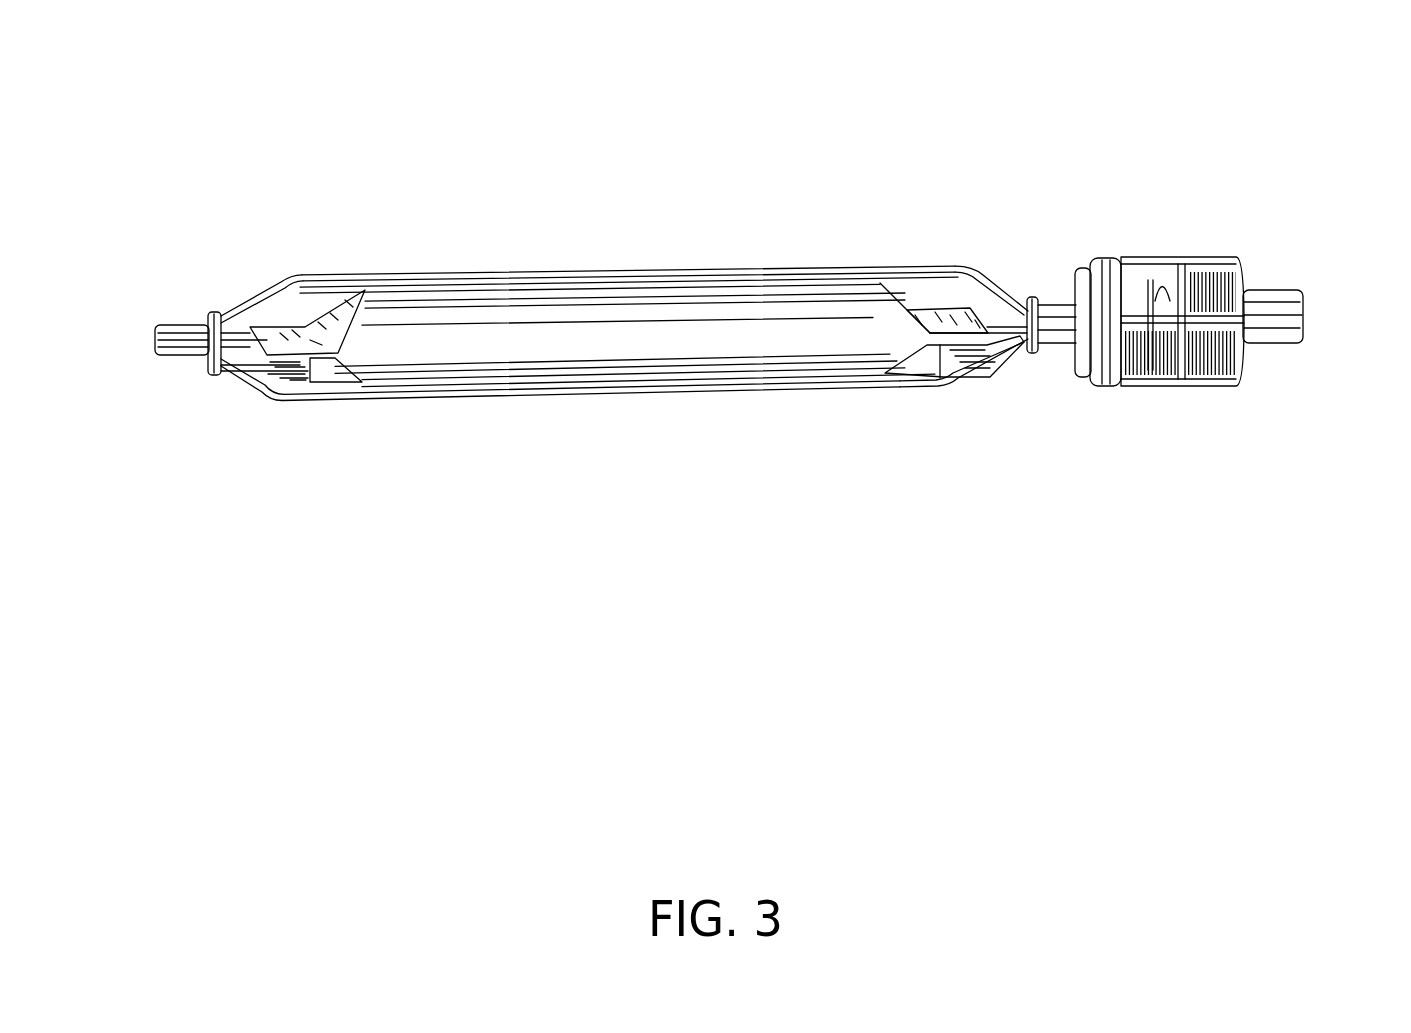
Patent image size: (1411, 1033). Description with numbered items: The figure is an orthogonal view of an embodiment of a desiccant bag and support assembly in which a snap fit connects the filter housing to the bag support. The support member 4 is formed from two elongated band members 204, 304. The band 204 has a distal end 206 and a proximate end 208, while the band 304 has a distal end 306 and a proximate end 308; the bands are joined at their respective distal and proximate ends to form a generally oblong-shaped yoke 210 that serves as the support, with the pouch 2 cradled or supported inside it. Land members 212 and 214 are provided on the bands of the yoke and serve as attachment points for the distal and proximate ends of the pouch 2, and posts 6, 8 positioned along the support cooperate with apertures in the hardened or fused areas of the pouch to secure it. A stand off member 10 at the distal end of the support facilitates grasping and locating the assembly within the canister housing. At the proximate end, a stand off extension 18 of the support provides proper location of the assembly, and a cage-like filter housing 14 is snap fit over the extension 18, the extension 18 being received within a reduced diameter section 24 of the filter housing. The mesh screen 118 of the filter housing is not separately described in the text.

The pouch 2 is at (602, 345).
The support member 4 is at (345, 400).
The post 6 is at (952, 315).
The post 8 is at (297, 330).
The stand off member 10 is at (175, 362).
The filter housing 14 is at (1205, 255).
The stand off extension 18 is at (1050, 347).
The reduced diameter section 24 is at (1287, 350).
The mesh screen 118 is at (1203, 382).
The band member 204 is at (575, 270).
The distal end 206 is at (988, 283).
The proximate end 208 is at (219, 314).
The yoke 210 is at (283, 286).
The land member 212 is at (295, 375).
The land member 214 is at (965, 353).
The band member 304 is at (575, 397).
The distal end 306 is at (926, 388).
The proximate end 308 is at (242, 385).